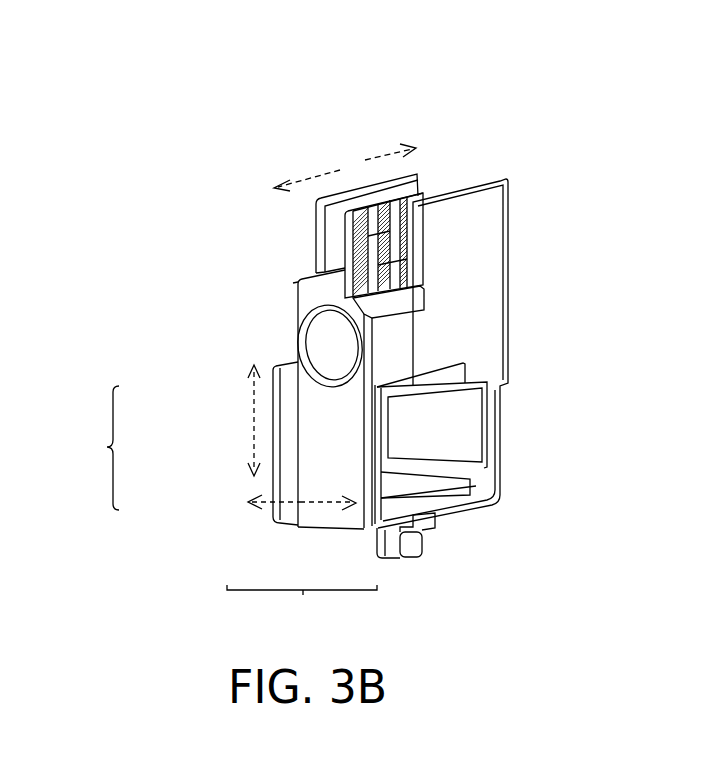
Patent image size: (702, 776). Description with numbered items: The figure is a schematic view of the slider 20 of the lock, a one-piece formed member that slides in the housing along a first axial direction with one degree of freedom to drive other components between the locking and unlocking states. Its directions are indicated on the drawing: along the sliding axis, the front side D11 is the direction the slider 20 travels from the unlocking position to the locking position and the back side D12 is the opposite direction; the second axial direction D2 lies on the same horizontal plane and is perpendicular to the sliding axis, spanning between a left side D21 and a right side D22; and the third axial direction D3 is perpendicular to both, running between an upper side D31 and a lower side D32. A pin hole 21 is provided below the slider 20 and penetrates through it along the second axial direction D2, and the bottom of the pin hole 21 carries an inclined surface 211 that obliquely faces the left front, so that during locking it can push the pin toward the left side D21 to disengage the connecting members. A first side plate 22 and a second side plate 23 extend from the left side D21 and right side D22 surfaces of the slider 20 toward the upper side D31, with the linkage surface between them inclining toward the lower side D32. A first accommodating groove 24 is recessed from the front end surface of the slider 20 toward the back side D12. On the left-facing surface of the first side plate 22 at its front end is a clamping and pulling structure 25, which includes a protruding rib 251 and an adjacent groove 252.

The slider 20 is at (437, 94).
The pin hole 21 is at (484, 420).
The inclined surface 211 is at (462, 492).
The first side plate 22 is at (466, 207).
The second side plate 23 is at (312, 240).
The first accommodating groove 24 is at (318, 326).
The clamping and pulling structure 25 is at (345, 261).
The protruding rib 251 is at (372, 236).
The groove 252 is at (385, 265).
The front side D11 is at (301, 169).
The back side D12 is at (394, 139).
The second axial direction D2 is at (302, 608).
The left side D21 is at (352, 510).
The right side D22 is at (256, 510).
The third axial direction D3 is at (92, 448).
The upper side D31 is at (251, 380).
The lower side D32 is at (251, 472).